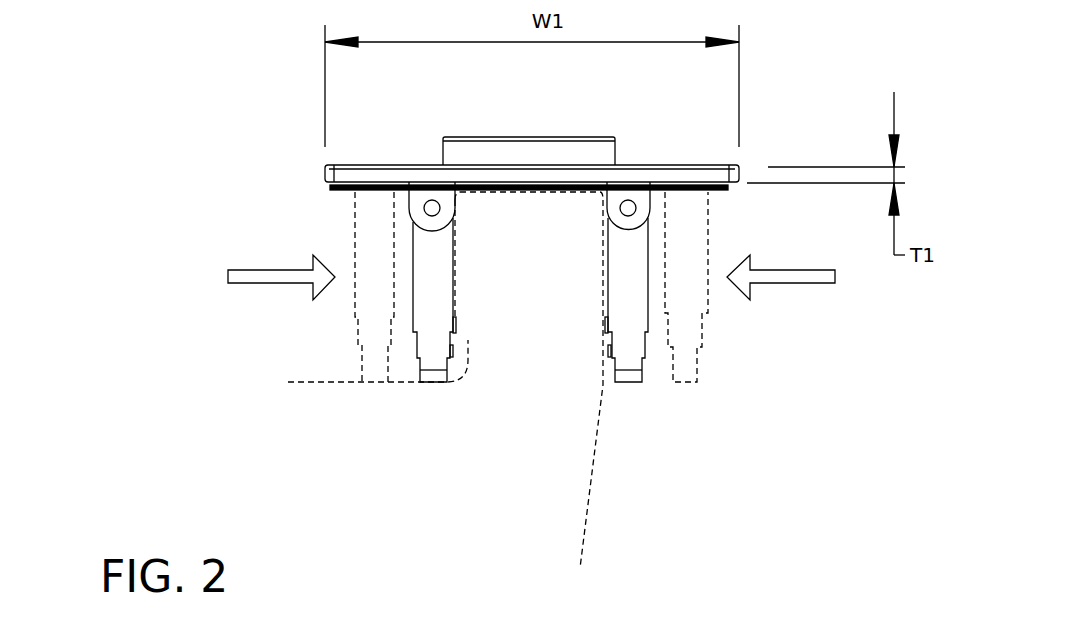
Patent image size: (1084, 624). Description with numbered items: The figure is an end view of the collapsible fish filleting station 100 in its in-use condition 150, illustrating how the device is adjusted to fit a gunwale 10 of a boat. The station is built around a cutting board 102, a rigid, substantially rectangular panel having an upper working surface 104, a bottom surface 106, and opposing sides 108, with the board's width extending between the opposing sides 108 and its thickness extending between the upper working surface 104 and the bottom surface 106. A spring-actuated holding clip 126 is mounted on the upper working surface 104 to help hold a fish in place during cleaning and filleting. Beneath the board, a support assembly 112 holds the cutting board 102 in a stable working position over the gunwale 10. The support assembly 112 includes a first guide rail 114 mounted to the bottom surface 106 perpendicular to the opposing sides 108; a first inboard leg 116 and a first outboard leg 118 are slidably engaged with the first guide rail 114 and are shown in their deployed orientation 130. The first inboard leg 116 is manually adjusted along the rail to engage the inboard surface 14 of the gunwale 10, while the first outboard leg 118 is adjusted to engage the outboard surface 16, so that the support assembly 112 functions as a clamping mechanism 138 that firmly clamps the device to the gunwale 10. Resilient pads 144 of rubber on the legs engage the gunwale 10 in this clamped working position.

The collapsible fish filleting station 100 is at (768, 120).
The cutting board 102 is at (313, 152).
The upper working surface 104 is at (375, 167).
The bottom surface 106 is at (348, 184).
The opposing sides 108 is at (326, 175).
The first guide rail 114 is at (362, 192).
The spring-actuated holding clip 126 is at (498, 136).
The first inboard leg 116 is at (437, 263).
The first outboard leg 118 is at (648, 295).
The resilient pads 144 is at (455, 346).
The gunwale 10 is at (607, 277).
The inboard surface 14 is at (455, 292).
The outboard surface 16 is at (607, 295).
The support assembly 112 is at (318, 320).
The in-use condition 150 is at (340, 425).
The deployed orientation 130 is at (497, 408).
The clamping mechanism 138 is at (722, 388).